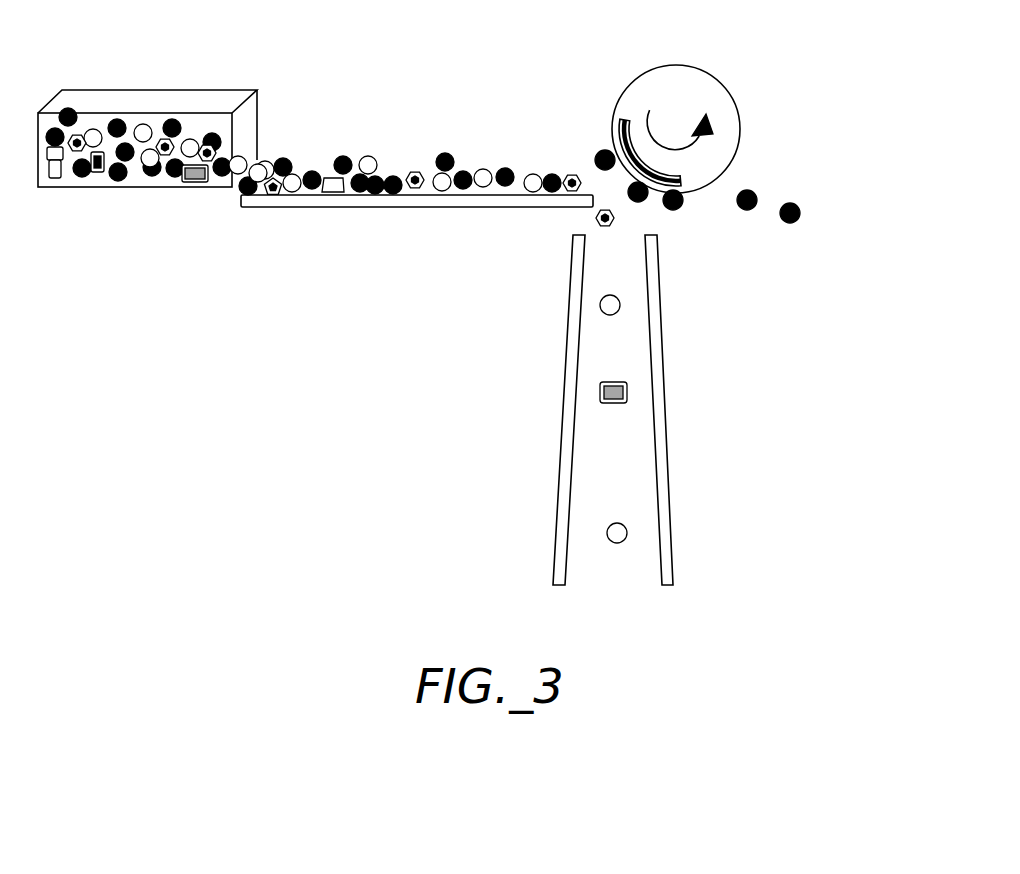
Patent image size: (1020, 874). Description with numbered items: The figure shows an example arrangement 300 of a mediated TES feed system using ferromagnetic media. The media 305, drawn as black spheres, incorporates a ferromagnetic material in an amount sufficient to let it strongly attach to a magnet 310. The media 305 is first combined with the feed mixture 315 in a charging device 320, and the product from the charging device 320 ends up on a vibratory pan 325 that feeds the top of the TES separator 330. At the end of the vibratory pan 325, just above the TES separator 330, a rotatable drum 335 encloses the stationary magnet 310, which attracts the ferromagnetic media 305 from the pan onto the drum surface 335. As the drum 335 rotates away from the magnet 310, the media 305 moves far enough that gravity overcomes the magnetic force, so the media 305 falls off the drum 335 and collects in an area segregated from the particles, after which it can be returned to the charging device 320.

The mobile device assembly/sorting system 300 is at (212, 503).
The media 305 is at (447, 153).
The magnet 310 is at (680, 175).
The feed mixture 315 is at (102, 187).
The charging device 320 is at (147, 130).
The vibratory pan 325 is at (365, 207).
The TES separator 330 is at (670, 430).
The rotatable drum 335 is at (712, 100).